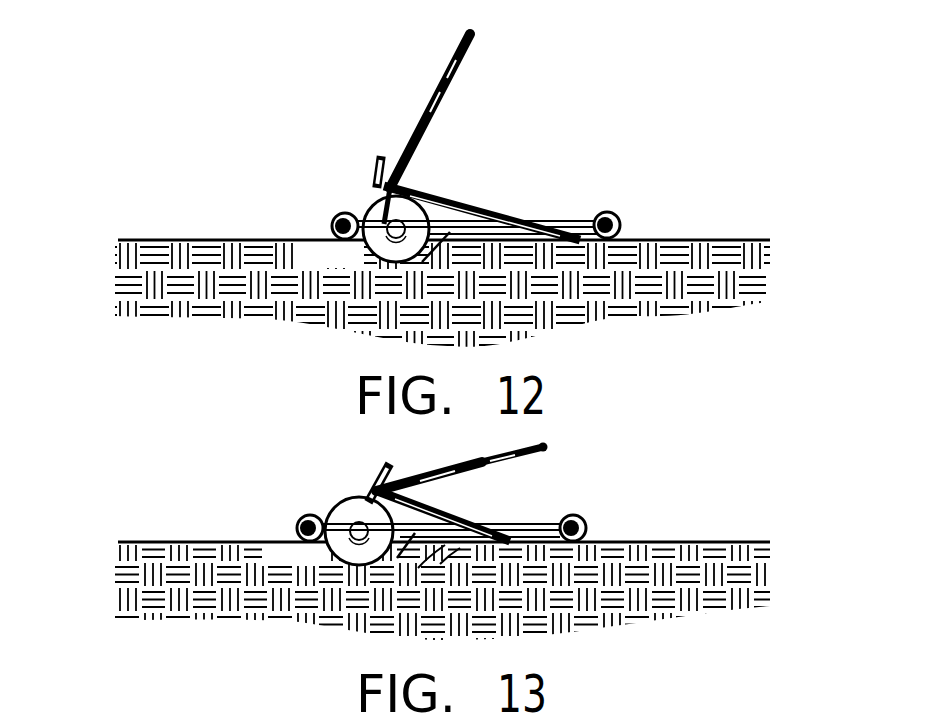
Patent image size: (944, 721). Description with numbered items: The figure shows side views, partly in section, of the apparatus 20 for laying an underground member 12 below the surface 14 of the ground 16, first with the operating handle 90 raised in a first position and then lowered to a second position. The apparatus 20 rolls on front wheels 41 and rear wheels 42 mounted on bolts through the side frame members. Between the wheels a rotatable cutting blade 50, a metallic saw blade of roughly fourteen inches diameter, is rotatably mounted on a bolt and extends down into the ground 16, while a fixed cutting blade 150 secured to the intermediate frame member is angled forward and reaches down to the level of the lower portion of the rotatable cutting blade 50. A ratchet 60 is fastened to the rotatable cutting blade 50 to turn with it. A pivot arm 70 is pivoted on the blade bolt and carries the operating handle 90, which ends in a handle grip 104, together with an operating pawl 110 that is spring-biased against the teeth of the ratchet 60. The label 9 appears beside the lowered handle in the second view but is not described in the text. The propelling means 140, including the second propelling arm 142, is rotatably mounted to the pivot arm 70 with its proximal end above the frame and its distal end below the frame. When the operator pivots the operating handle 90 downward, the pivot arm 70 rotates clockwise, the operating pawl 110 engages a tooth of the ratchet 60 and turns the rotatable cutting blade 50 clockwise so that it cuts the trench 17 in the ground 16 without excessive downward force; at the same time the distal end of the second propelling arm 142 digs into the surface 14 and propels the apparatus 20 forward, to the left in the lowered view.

In FIG. 13, the handle 9 is at (462, 460).
In FIG. 12, the underground member 12 is at (558, 222).
In FIG. 13, the underground member 12 is at (542, 530).
In FIG. 12, the surface 14 is at (176, 240).
In FIG. 13, the surface 14 is at (202, 542).
In FIG. 12, the ground 16 is at (123, 277).
In FIG. 13, the ground 16 is at (120, 565).
In FIG. 13, the trench 17 is at (410, 555).
In FIG. 12, the apparatus 20 is at (662, 100).
In FIG. 13, the apparatus 20 is at (668, 432).
In FIG. 12, the front wheels 41 is at (332, 220).
In FIG. 13, the front wheels 41 is at (300, 520).
In FIG. 12, the rear wheels 42 is at (618, 214).
In FIG. 13, the rear wheels 42 is at (592, 528).
In FIG. 12, the rotatable cutting blade 50 is at (372, 248).
In FIG. 13, the rotatable cutting blade 50 is at (302, 560).
In FIG. 12, the ratchet 60 is at (362, 190).
In FIG. 13, the ratchet 60 is at (348, 490).
In FIG. 12, the pivot arm 70 is at (375, 160).
In FIG. 13, the pivot arm 70 is at (376, 463).
In FIG. 12, the operating handle 90 is at (440, 82).
In FIG. 12, the handle grip 104 is at (475, 34).
In FIG. 13, the handle grip 104 is at (548, 448).
In FIG. 12, the operating pawl 110 is at (408, 188).
In FIG. 13, the operating pawl 110 is at (428, 508).
In FIG. 12, the propelling means 140 is at (558, 110).
In FIG. 13, the propelling means 140 is at (692, 455).
In FIG. 12, the second propelling arm 142 is at (462, 222).
In FIG. 13, the second propelling arm 142 is at (482, 525).
In FIG. 12, the fixed cutting blade 150 is at (402, 265).
In FIG. 13, the fixed cutting blade 150 is at (375, 565).